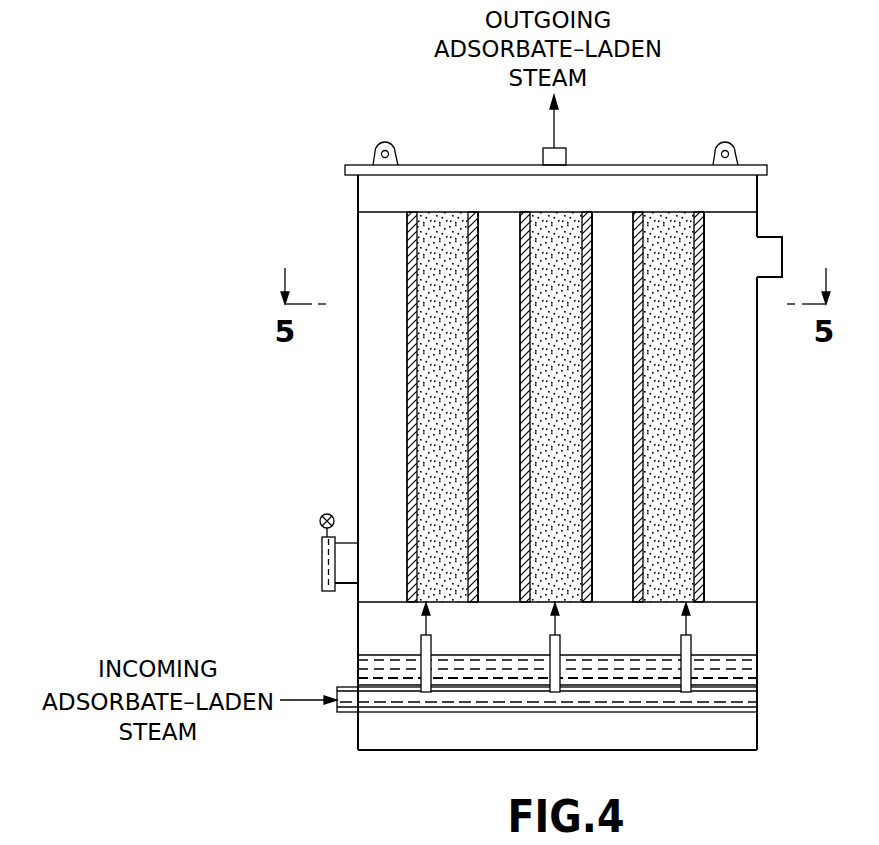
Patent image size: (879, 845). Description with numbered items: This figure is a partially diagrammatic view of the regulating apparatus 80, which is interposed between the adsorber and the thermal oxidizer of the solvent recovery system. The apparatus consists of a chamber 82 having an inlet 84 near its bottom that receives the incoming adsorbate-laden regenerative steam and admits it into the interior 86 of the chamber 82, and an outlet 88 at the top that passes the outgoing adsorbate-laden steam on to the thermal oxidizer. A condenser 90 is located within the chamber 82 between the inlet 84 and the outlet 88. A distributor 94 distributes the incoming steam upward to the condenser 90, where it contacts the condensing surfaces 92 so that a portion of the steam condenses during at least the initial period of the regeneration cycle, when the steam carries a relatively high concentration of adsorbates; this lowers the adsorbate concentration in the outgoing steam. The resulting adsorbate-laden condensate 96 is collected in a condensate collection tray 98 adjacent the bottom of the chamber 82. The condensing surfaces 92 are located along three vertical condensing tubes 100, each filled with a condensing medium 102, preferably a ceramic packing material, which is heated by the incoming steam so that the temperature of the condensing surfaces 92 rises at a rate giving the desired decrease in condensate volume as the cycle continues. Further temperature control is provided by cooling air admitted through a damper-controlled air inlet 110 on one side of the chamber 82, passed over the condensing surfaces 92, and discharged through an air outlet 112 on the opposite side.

The regulating apparatus 80 is at (347, 199).
The chamber 82 is at (358, 236).
The inlet 84 is at (337, 704).
The interior 86 is at (370, 613).
The outlet 88 is at (556, 147).
The condenser 90 is at (564, 365).
The condensing surfaces 92 is at (520, 449).
The distributor 94 is at (751, 700).
The adsorbate-laden condensate 96 is at (736, 663).
The condensate collection tray 98 is at (745, 684).
The condensing tubes 100 is at (407, 340).
The condensing medium 102 is at (425, 250).
The damper-controlled air inlet 110 is at (322, 545).
The air outlet 112 is at (782, 249).